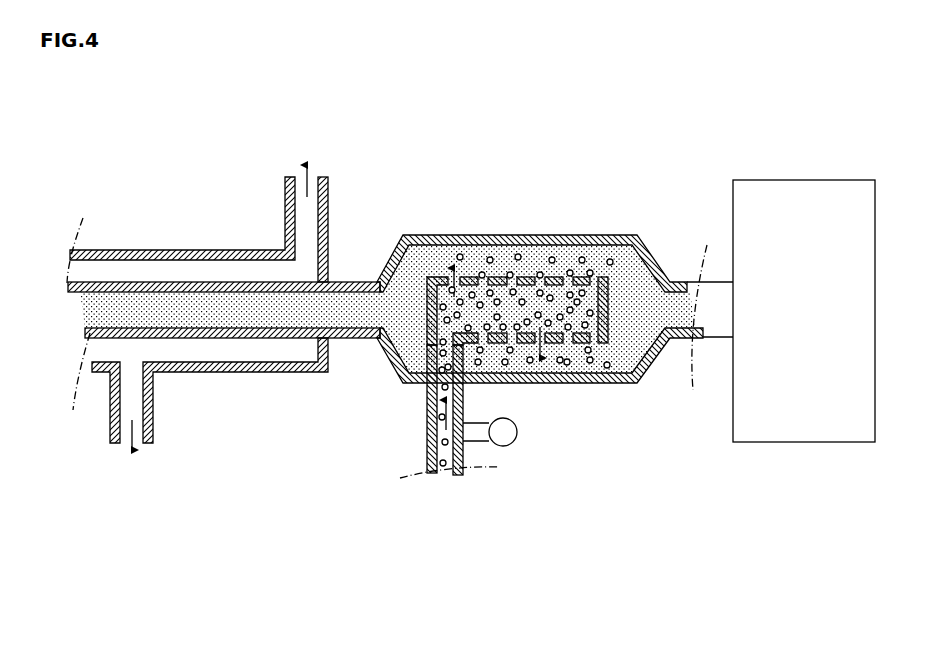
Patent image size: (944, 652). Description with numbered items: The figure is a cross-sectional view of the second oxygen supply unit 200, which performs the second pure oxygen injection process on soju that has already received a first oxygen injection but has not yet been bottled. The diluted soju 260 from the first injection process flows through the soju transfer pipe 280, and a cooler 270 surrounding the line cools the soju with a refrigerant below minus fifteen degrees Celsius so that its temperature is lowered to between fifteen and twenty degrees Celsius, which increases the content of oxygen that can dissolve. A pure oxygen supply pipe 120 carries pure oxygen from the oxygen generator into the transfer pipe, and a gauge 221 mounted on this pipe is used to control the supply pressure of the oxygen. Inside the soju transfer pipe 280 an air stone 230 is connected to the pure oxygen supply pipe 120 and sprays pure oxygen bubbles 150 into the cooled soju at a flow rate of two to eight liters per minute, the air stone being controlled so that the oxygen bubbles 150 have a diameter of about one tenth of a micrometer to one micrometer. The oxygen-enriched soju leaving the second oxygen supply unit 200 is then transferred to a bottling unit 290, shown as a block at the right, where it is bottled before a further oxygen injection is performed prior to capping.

The pure oxygen supply pipe 120 is at (425, 432).
The pure oxygen bubbles 150 is at (571, 292).
The second oxygen supply unit 200 is at (543, 205).
The valve/gauge 221 is at (505, 446).
The air stone 230 is at (578, 340).
The diluted soju 260 is at (407, 288).
The cooler 270 is at (240, 368).
The soju transfer pipe 280 is at (482, 235).
The bottling unit 290 is at (768, 415).